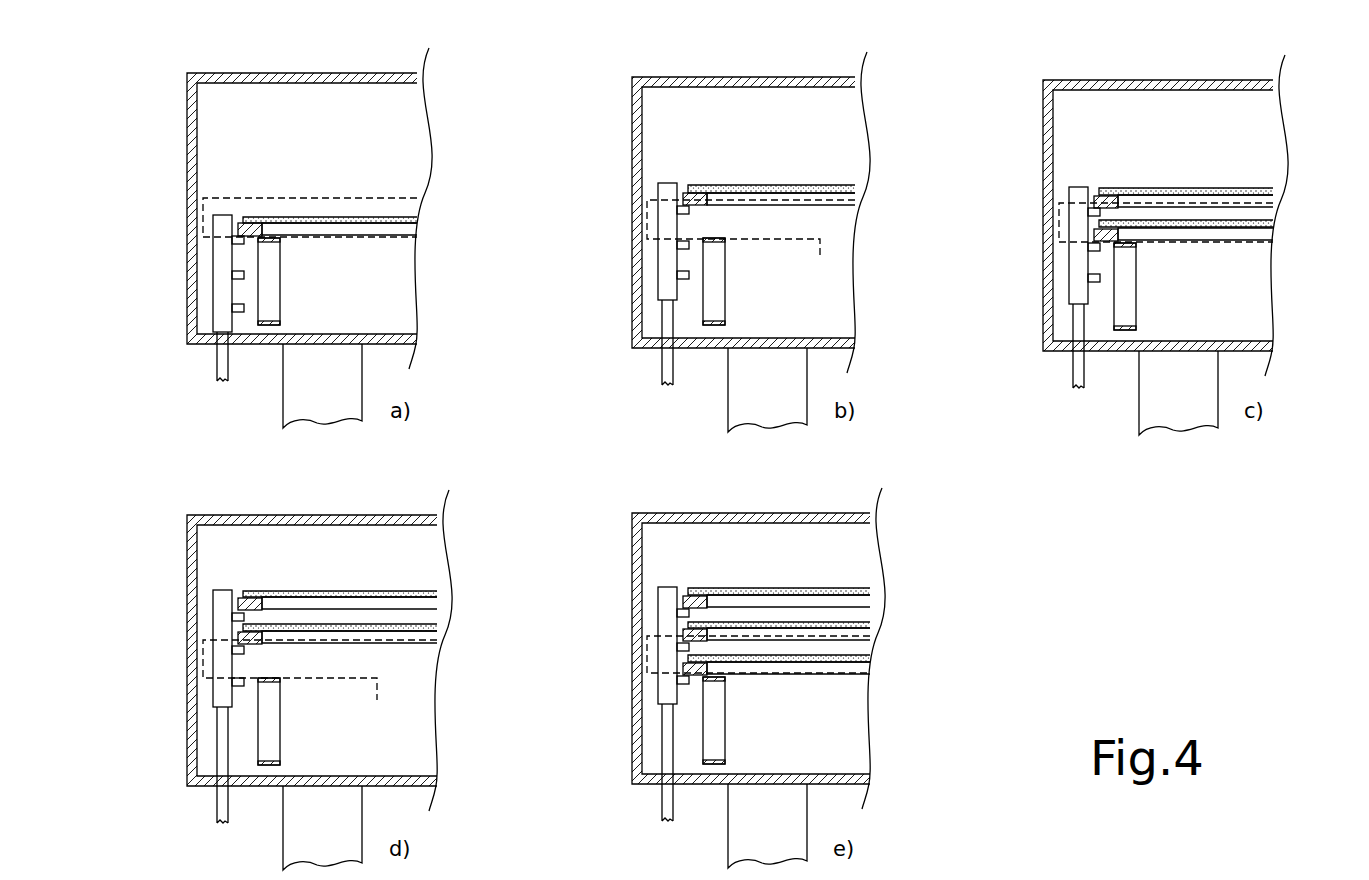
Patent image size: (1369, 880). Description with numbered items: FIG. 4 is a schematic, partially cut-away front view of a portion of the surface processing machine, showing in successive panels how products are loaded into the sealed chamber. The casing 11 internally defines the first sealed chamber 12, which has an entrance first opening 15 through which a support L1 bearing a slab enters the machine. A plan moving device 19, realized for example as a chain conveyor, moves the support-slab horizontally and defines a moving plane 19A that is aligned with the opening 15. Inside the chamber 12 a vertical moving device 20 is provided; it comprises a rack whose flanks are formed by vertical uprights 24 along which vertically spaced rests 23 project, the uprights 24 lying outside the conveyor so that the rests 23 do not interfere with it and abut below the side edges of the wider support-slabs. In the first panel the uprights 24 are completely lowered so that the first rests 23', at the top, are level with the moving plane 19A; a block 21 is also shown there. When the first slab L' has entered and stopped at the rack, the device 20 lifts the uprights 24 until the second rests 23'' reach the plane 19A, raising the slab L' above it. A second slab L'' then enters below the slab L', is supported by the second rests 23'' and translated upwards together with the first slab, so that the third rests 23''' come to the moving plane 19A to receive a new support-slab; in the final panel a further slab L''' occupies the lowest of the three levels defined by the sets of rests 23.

The casing 11 is at (250, 73).
The first sealed chamber 12 is at (320, 110).
The entrance first opening 15 is at (223, 198).
The plan moving device 19 is at (272, 290).
The moving plane 19A is at (398, 234).
The vertical moving device 20 is at (212, 368).
The spacer block 21 is at (288, 223).
The rests 23 is at (614, 472).
The first rests 23' is at (409, 218).
The second rests 23'' is at (409, 283).
The third rests 23''' is at (186, 335).
The vertical uprights 24 is at (222, 271).
The first slab L' is at (758, 357).
The second slab L'' is at (790, 414).
The third layer L''' is at (811, 646).
The support L1 is at (1182, 233).